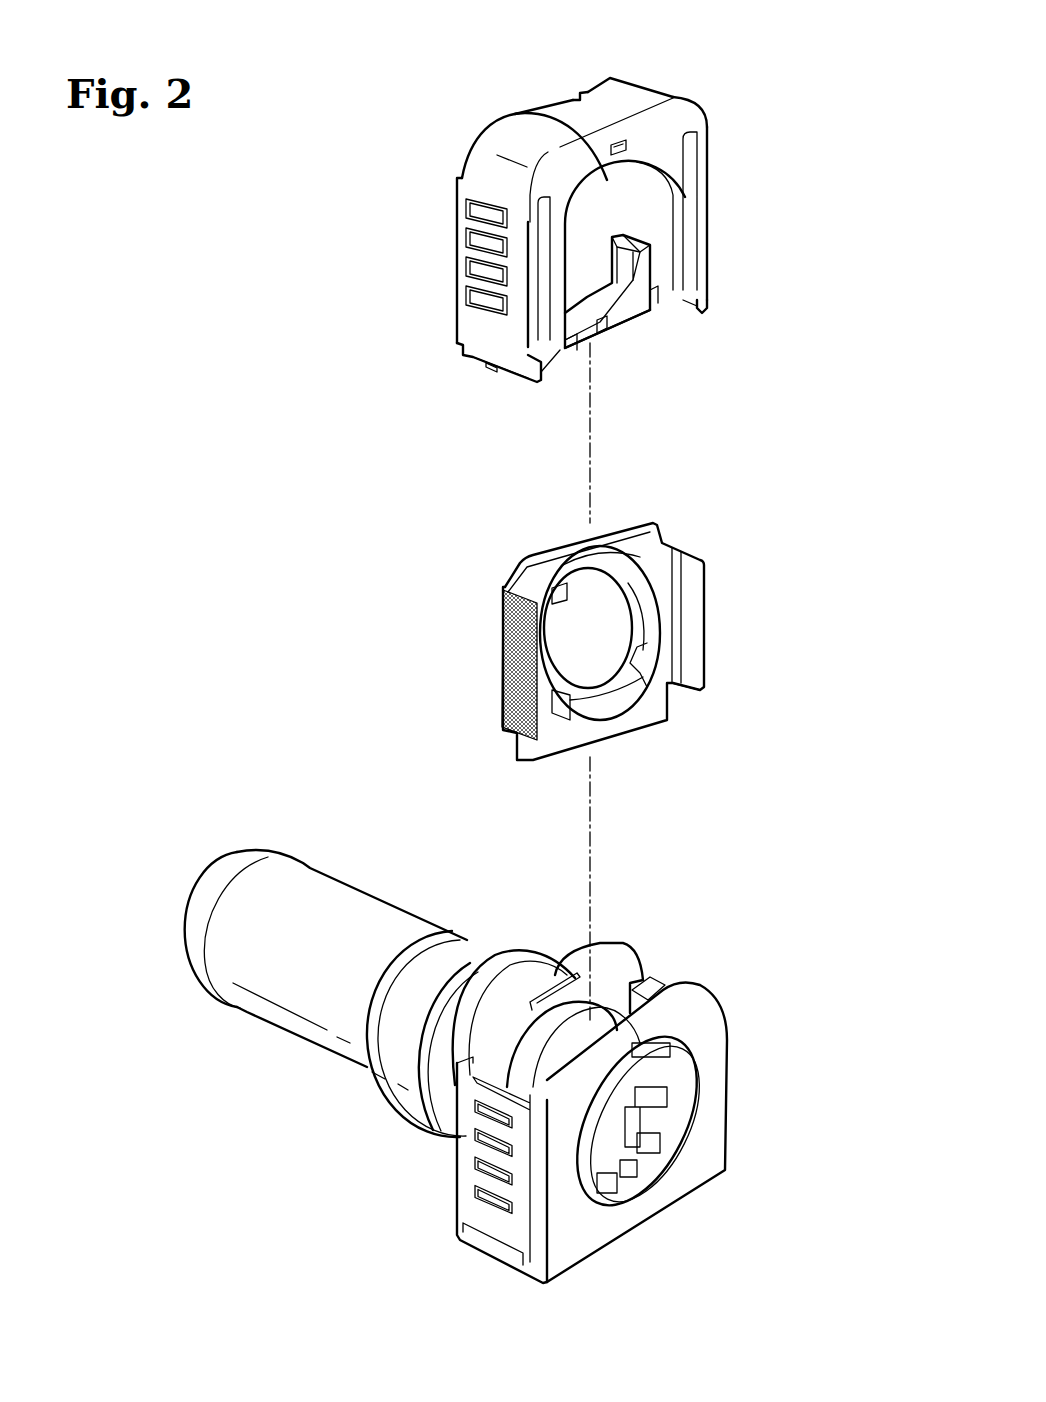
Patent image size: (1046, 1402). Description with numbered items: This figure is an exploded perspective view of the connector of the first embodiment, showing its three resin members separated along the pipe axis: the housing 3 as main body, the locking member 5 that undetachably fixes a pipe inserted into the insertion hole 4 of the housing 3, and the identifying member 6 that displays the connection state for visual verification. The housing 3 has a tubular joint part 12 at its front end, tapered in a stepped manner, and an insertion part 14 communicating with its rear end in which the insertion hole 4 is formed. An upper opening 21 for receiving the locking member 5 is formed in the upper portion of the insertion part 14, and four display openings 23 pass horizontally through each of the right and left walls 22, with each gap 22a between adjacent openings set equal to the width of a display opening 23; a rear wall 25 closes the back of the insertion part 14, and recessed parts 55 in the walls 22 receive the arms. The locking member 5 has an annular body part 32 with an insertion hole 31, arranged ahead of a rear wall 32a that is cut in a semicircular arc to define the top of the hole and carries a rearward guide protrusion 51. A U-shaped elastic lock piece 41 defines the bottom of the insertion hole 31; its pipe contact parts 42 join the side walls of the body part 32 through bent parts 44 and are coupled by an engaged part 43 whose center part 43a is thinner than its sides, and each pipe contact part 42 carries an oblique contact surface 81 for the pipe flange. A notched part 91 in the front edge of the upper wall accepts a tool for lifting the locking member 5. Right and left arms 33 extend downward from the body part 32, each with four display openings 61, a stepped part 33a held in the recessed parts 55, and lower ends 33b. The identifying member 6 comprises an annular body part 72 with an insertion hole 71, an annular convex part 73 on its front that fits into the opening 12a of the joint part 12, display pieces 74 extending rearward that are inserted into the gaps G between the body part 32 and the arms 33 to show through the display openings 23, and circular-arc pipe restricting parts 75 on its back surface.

The housing 3 is at (489, 1080).
The insertion hole 4 is at (690, 1073).
The locking member 5 is at (584, 224).
The identifying member 6 is at (616, 628).
The joint part 12 is at (383, 897).
The opening 12a is at (563, 1013).
The insertion part 14 is at (617, 940).
The upper opening 21 is at (513, 1023).
The right and left walls 22 is at (660, 982).
The gap 22a is at (508, 1195).
The display openings 23 is at (477, 1197).
The rear wall 25 is at (703, 1022).
The insertion hole 31 is at (522, 115).
The body part 32 is at (643, 78).
The rear wall 32a is at (687, 117).
The arms 33 is at (450, 203).
The stepped part 33a is at (477, 362).
The lower ends 33b is at (517, 370).
The elastic lock piece 41 is at (640, 330).
The pipe contact parts 42 is at (575, 357).
The engaged part 43 is at (613, 330).
The center part 43a is at (607, 337).
The bent parts 44 is at (613, 237).
The guide protrusion 51 is at (621, 140).
The recessed parts 55 is at (470, 1237).
The display openings 61 is at (483, 320).
The insertion hole 71 is at (633, 602).
The body part 72 is at (530, 552).
The annular convex part 73 is at (567, 540).
The display pieces 74 is at (690, 655).
The pipe restricting parts 75 is at (630, 558).
The contact surface 81 is at (633, 248).
The notched part 91 is at (570, 103).
The gaps G is at (690, 182).